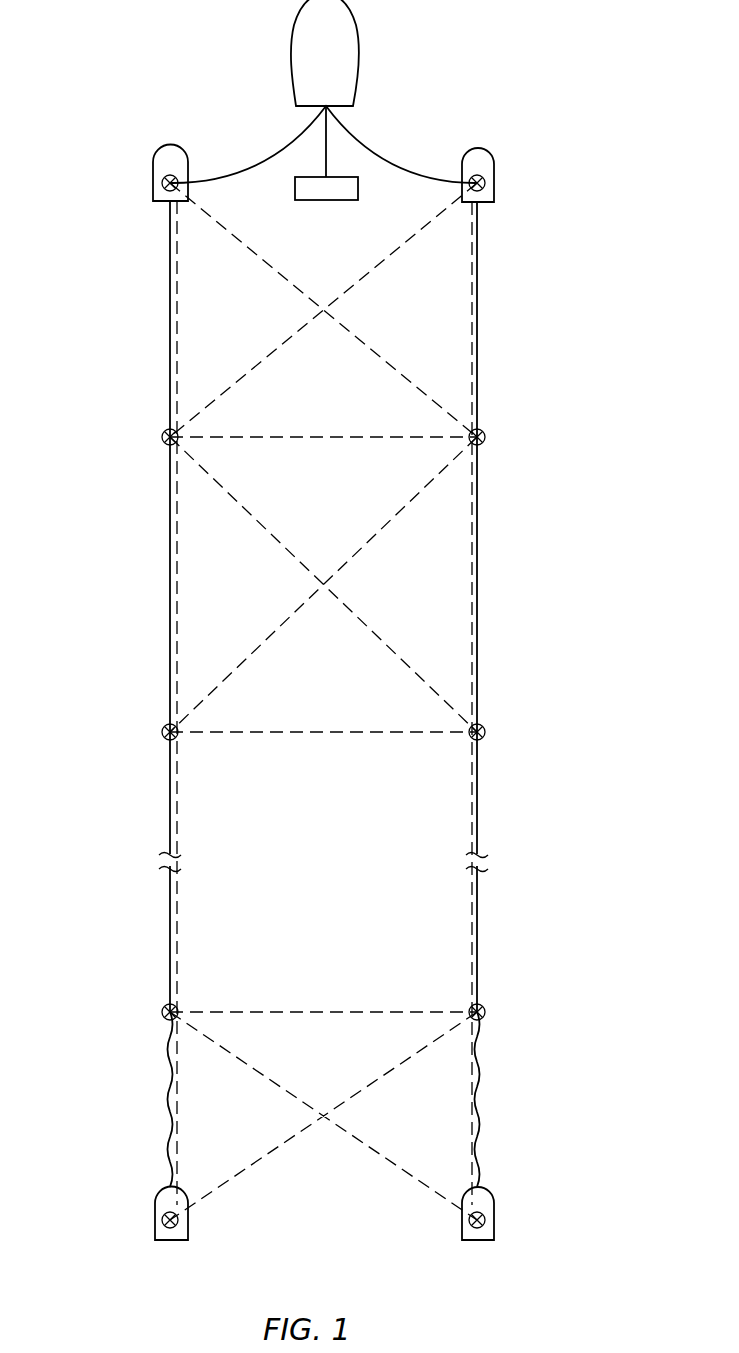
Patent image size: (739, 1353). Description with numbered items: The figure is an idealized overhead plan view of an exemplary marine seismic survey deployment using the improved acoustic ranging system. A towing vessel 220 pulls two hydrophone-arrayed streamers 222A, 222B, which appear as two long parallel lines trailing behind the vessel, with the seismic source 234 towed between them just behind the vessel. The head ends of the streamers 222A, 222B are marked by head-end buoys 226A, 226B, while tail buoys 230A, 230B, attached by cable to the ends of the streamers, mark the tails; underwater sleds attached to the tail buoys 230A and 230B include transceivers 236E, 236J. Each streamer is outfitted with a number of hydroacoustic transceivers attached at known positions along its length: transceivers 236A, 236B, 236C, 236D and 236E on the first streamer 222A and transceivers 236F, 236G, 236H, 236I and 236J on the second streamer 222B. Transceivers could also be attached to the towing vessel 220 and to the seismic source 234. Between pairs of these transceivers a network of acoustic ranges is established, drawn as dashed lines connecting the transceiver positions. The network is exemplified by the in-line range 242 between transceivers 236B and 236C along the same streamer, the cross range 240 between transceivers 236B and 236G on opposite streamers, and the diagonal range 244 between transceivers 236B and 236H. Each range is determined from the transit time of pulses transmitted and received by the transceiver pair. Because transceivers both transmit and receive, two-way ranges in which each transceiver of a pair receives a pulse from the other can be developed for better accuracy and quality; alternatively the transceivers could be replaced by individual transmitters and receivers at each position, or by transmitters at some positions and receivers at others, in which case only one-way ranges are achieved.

The towing vessel 220 is at (360, 50).
The streamer 222A is at (170, 795).
The streamer 222B is at (480, 805).
The head-end buoy 226A is at (175, 146).
The head-end buoy 226B is at (488, 150).
The tail buoy 230A is at (155, 1236).
The tail buoy 230B is at (494, 1236).
The seismic source 234 is at (343, 200).
The hydroacoustic transceiver 236A is at (162, 183).
The hydroacoustic transceiver 236B is at (165, 442).
The hydroacoustic transceiver 236C is at (165, 737).
The hydroacoustic transceiver 236D is at (165, 1017).
The hydroacoustic transceiver 236E is at (162, 1218).
The hydroacoustic transceiver 236F is at (485, 183).
The hydroacoustic transceiver 236G is at (485, 436).
The hydroacoustic transceiver 236H is at (485, 730).
The hydroacoustic transceiver 236I is at (485, 1010).
The hydroacoustic transceiver 236J is at (485, 1218).
The cross range 240 is at (312, 437).
The in-line range 242 is at (177, 625).
The diagonal range 244 is at (265, 525).